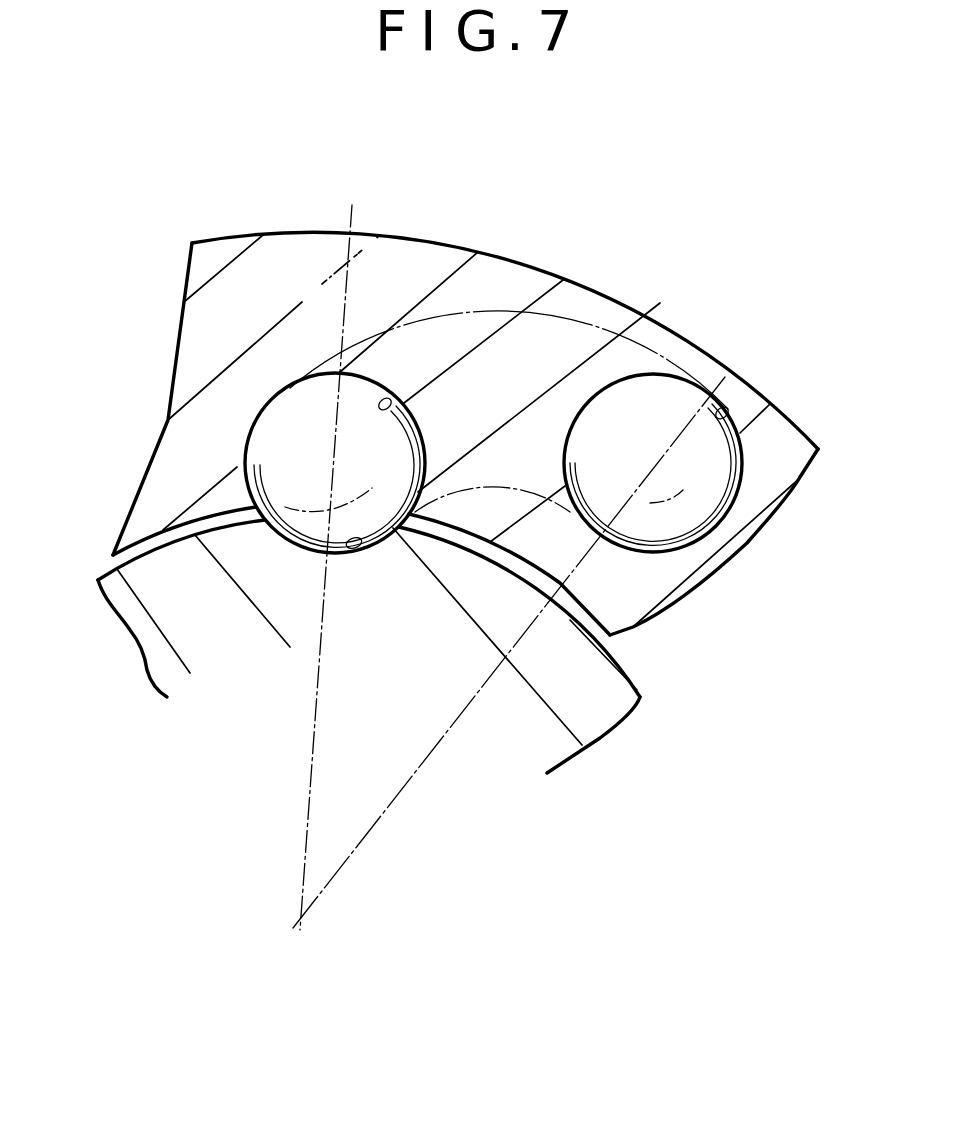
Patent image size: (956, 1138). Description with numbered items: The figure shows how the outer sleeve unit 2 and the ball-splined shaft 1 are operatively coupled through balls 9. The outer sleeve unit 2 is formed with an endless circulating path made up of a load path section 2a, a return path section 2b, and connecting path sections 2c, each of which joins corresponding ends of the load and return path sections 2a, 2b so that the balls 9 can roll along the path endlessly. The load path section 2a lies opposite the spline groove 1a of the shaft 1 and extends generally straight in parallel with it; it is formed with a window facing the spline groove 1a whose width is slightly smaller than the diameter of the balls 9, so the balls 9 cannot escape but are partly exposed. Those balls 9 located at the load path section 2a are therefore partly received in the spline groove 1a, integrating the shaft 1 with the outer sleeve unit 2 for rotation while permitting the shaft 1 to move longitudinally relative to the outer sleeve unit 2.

The ball-splined shaft 1 is at (613, 702).
The spline groove 1a is at (366, 546).
The outer sleeve unit 2 is at (406, 255).
The load path section 2a is at (392, 402).
The return path section 2b is at (730, 410).
The connecting path section 2c is at (563, 332).
The ball 9 is at (265, 454).